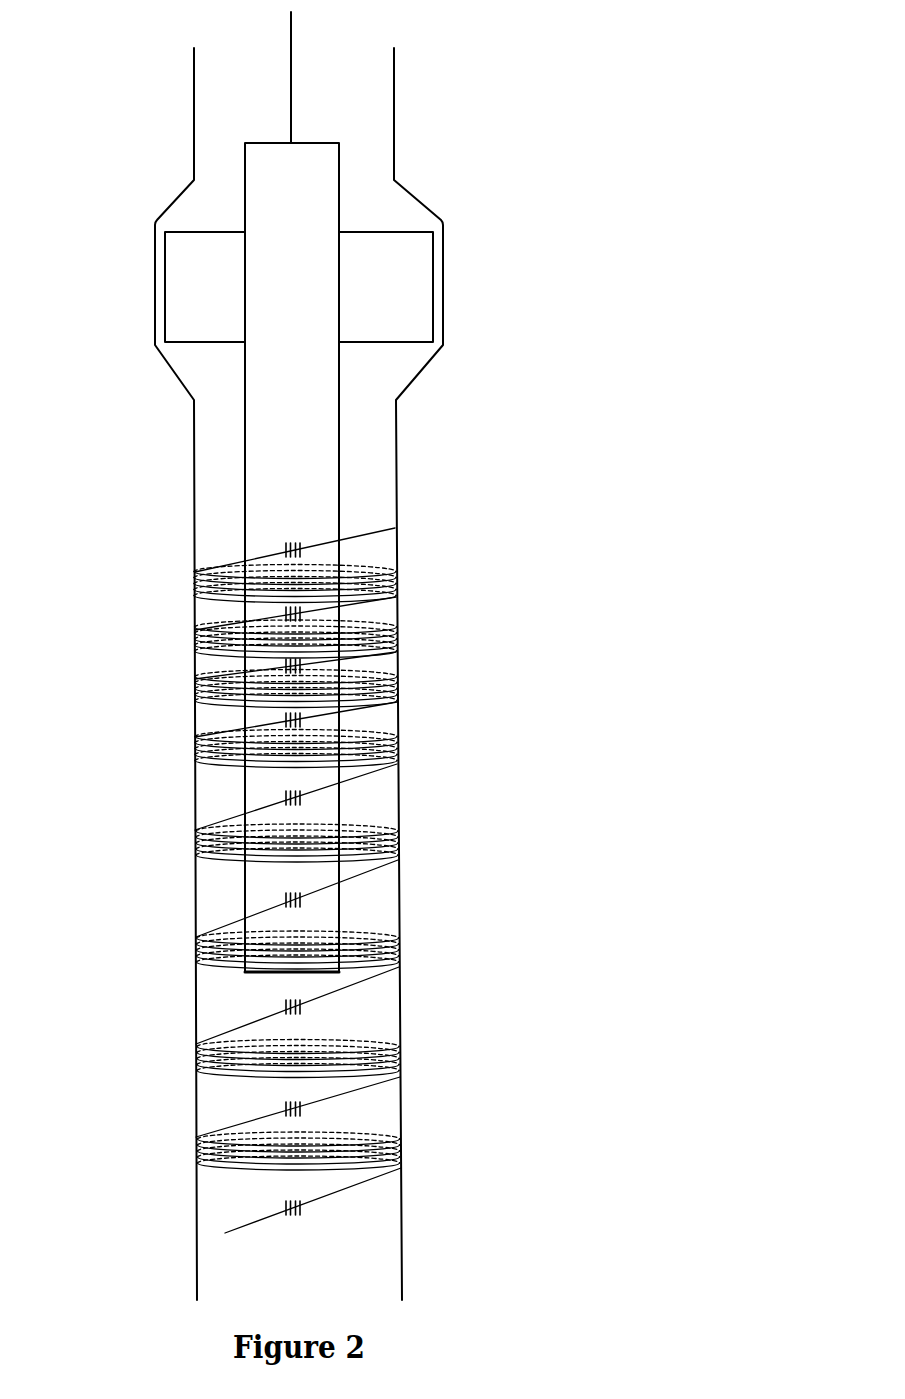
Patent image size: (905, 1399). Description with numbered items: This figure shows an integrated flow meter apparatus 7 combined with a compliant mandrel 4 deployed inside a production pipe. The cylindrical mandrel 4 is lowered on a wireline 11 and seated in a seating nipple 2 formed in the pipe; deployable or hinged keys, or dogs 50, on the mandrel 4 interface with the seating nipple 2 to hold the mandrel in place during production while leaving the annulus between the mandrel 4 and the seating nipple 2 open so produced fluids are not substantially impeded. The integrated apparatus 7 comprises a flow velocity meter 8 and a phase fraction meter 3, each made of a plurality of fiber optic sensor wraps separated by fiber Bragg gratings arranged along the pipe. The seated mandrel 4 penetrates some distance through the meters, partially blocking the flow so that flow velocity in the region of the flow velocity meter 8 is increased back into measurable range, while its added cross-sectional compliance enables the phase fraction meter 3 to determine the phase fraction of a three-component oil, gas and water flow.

The seating nipple 2 is at (155, 255).
The mandrel 4 is at (303, 456).
The wireline 11 is at (291, 104).
The dogs 50 is at (208, 272).
The integrated flow meter apparatus 7 is at (232, 880).
The flow velocity meter 8 is at (194, 558).
The phase fraction meter 3 is at (276, 995).